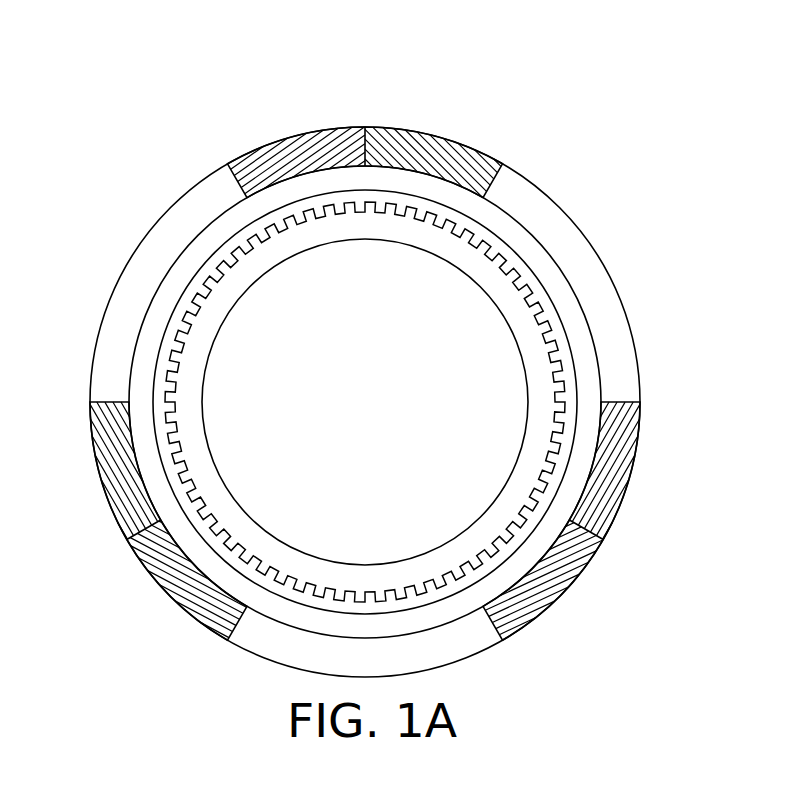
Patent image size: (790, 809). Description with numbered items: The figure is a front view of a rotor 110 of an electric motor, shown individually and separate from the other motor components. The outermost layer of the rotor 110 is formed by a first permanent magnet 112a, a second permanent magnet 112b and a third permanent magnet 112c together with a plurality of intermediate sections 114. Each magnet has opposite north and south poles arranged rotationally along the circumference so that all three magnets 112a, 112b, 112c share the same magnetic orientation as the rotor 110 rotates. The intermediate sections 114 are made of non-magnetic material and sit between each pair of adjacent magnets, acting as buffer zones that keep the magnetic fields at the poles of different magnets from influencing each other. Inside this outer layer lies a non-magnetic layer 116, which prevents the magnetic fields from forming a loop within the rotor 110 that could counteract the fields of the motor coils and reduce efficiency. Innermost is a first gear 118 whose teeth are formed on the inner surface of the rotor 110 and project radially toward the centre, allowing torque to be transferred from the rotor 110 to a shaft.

The rotor 110 is at (275, 104).
The first permanent magnet 112a is at (423, 150).
The second permanent magnet 112b is at (558, 580).
The third permanent magnet 112c is at (173, 582).
The intermediate sections 114 is at (562, 230).
The non-magnetic layer 116 is at (493, 220).
The first gear 118 is at (542, 312).